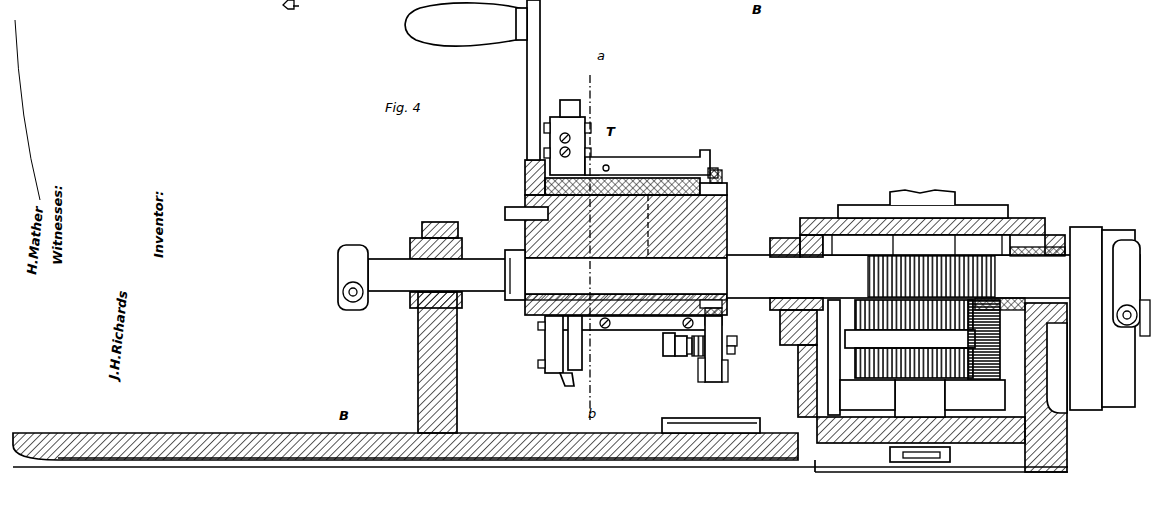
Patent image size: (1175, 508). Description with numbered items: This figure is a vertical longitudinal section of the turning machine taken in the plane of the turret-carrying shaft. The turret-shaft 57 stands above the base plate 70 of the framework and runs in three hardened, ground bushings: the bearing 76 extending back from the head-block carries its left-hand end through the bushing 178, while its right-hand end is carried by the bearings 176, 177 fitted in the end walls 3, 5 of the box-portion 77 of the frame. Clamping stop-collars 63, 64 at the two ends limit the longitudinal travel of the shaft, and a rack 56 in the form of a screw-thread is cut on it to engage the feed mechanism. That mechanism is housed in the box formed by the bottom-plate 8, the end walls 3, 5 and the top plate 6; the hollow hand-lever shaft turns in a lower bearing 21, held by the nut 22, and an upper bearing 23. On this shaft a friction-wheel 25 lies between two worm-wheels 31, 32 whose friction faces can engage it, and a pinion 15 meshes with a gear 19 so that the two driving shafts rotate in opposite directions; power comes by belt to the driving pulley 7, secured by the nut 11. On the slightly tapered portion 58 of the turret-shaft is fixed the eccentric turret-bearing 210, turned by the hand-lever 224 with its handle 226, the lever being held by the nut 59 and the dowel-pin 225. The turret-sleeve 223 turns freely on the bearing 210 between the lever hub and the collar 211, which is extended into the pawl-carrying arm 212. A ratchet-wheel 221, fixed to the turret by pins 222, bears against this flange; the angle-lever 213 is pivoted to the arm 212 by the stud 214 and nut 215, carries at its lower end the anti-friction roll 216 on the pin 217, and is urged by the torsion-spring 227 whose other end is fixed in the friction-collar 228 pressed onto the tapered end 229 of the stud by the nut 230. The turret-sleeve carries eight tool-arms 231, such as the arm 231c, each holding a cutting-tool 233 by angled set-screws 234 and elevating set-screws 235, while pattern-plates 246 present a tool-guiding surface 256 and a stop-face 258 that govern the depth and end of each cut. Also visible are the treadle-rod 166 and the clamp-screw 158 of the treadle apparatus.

The base plate 70 is at (252, 436).
The bearing bushing 178 is at (412, 396).
The bearing 76 is at (440, 230).
The tapered portion of turret-shaft 58 is at (540, 304).
The turret-sleeve 223 is at (636, 190).
The eccentric turret-bearing 210 is at (662, 195).
The collar of turret-bearing 211 is at (722, 190).
The ratchet-wheel 221 is at (722, 172).
The dowel-pin 225 is at (520, 212).
The turret-shaft 57 is at (745, 270).
The clamping stop-collar 64 is at (356, 258).
The nut 59 is at (512, 300).
The hand-lever 224 is at (530, 80).
The handle 226 is at (462, 28).
The tool-arms 231 is at (568, 116).
The set-screws 235 is at (560, 150).
The set-screws 234 is at (544, 126).
The stop-face 258 is at (573, 168).
The pattern-plates 246 is at (645, 172).
The tool-guiding surface 256 is at (690, 165).
The pins 222 is at (714, 166).
The pawl-carrying arm 212 is at (724, 316).
The tool-arm 231c is at (548, 346).
The cutting-tool 233 is at (563, 378).
The tapered end of stud 229 is at (663, 343).
The nut 230 is at (678, 346).
The friction-collar 228 is at (688, 350).
The torsion-spring 227 is at (698, 356).
The anti-friction roll 216 is at (710, 382).
The pin 217 is at (700, 372).
The angle-lever 213 is at (726, 382).
The nut 215 is at (737, 340).
The stud 214 is at (735, 350).
The end wall 5 is at (800, 398).
The end wall 3 is at (1035, 396).
The nut 22 is at (950, 452).
The bottom-plate 8 is at (866, 430).
The top plate 6 is at (834, 226).
The bearing 177 is at (788, 240).
The bearing 176 is at (1054, 240).
The box-portion of frame 77 is at (1018, 224).
The upper bearing 23 is at (912, 200).
The rack 56 is at (968, 250).
The worm-wheel 32 is at (862, 312).
The friction-wheel 25 is at (884, 342).
The worm-wheel 31 is at (924, 360).
The gear 19 is at (984, 380).
The pinion 15 is at (1000, 314).
The lower bearing 21 is at (910, 400).
The driving pulley 7 is at (1120, 374).
The clamping stop-collar 63 is at (1135, 285).
The nut 11 is at (1148, 338).
The treadle-rod 166 is at (283, 6).
The clamp-screw 158 is at (342, 0).